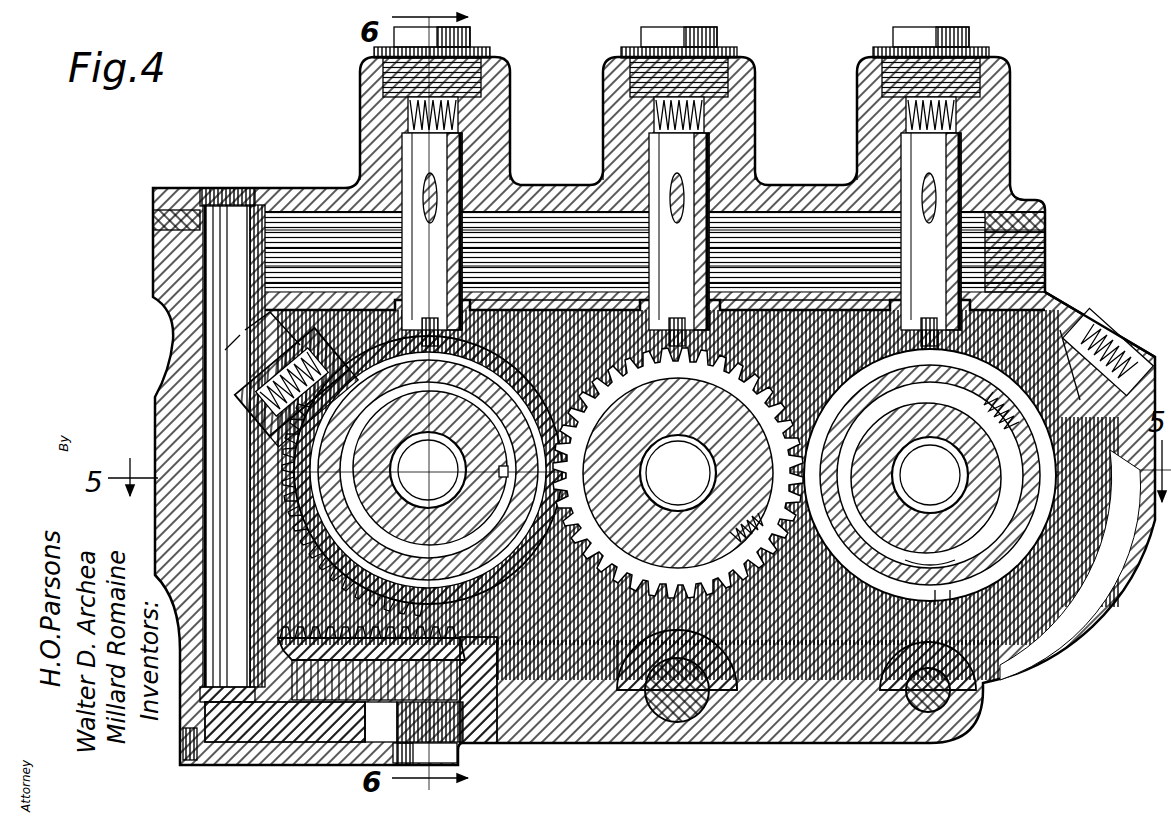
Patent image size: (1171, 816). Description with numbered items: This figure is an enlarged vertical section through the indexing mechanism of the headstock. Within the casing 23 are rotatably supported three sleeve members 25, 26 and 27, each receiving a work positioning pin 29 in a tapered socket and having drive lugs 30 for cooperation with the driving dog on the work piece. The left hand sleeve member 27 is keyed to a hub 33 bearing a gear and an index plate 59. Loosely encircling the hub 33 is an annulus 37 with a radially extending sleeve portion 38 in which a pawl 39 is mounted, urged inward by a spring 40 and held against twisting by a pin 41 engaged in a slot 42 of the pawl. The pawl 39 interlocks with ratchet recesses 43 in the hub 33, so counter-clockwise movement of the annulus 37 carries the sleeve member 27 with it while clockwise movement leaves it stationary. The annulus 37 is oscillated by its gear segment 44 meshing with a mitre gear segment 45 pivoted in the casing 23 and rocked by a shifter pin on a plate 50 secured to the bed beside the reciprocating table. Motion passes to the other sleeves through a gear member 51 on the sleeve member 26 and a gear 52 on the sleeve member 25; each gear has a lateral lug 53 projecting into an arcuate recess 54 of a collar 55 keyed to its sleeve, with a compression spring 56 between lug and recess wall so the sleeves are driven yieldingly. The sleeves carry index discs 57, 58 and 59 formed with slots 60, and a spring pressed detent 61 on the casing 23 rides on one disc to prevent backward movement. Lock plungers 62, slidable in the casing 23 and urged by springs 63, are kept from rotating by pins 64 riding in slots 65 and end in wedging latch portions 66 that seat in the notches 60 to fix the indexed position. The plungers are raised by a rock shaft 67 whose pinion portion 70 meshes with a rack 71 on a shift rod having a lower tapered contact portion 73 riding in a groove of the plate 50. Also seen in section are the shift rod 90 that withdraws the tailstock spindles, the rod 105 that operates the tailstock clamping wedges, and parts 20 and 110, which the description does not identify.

The housing 20 is at (700, 690).
The casing 23 is at (1060, 330).
The sleeve member 25 is at (975, 495).
The sleeve member 26 is at (715, 488).
The sleeve member 27 is at (300, 480).
The work positioning pin 29 is at (430, 468).
The drive lug 30 is at (520, 690).
The hub 33 is at (330, 420).
The annulus 37 is at (335, 500).
The radially extending sleeve portion 38 is at (262, 372).
The pawl 39 is at (300, 395).
The spring 40 is at (215, 325).
The pin 41 is at (300, 265).
The slot 42 is at (258, 250).
The ratchet recess 43 is at (470, 250).
The gear segment 44 is at (400, 605).
The mitre gear segment 45 is at (280, 720).
The plate 50 is at (330, 720).
The gear member 51 is at (725, 690).
The gear 52 is at (990, 380).
The lug 53 is at (926, 521).
The arcuate recess 54 is at (1065, 330).
The collar 55 is at (580, 690).
The compression spring 56 is at (1000, 398).
The index disc 57 is at (1025, 240).
The index disc 58 is at (770, 330).
The index plate 59 is at (442, 200).
The slot 60 is at (735, 330).
The spring pressed detent 61 is at (1100, 340).
The lock plunger 62 is at (482, 122).
The spring 63 is at (410, 112).
The pin 64 is at (445, 180).
The slot 65 is at (420, 150).
The wedging latch portion 66 is at (368, 200).
The rock shaft 67 is at (1025, 230).
The pinion portion 70 is at (205, 212).
The rack 71 is at (220, 345).
The tapered contact portion 73 is at (195, 745).
The shift rod 90 is at (935, 690).
The rod 105 is at (682, 735).
The block 110 is at (475, 720).